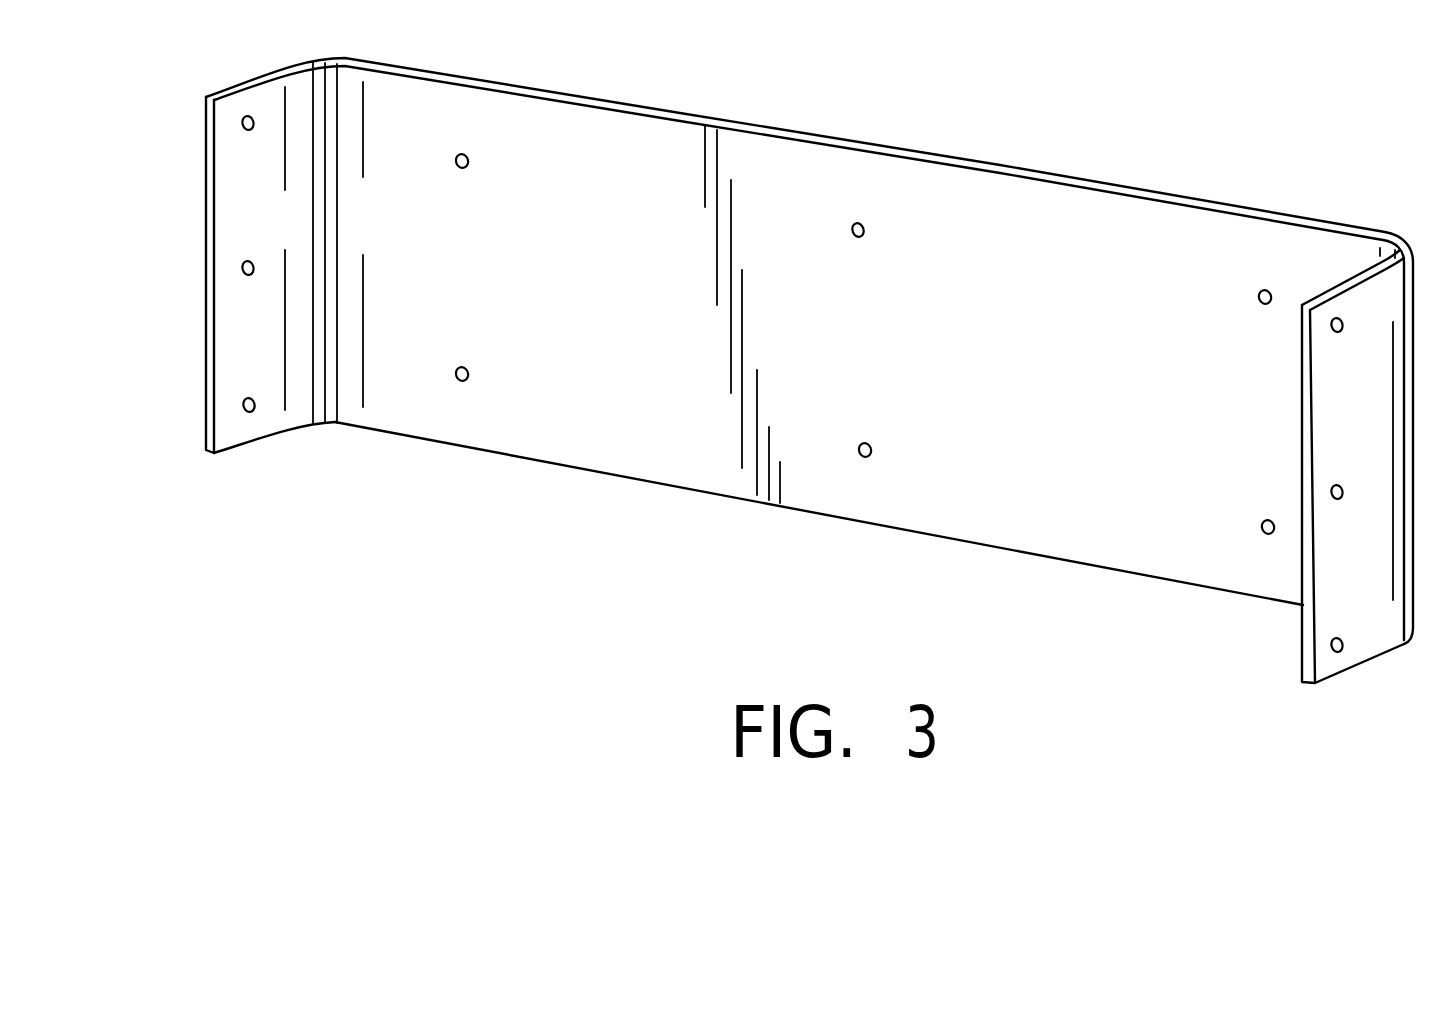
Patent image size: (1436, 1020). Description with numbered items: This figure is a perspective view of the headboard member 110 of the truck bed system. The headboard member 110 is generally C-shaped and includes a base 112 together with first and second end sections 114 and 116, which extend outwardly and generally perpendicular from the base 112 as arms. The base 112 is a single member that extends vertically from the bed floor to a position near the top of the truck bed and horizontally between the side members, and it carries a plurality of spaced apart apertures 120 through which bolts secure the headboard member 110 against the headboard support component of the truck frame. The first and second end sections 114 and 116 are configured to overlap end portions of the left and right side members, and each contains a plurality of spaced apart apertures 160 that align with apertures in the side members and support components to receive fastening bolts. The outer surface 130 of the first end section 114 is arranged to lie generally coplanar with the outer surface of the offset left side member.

The headboard member 110 is at (1017, 107).
The base 112 is at (618, 437).
The first end section 114 is at (228, 348).
The second end section 116 is at (1328, 583).
The apertures 120 is at (853, 242).
The outer surface 130 is at (228, 203).
The apertures 160 is at (242, 271).